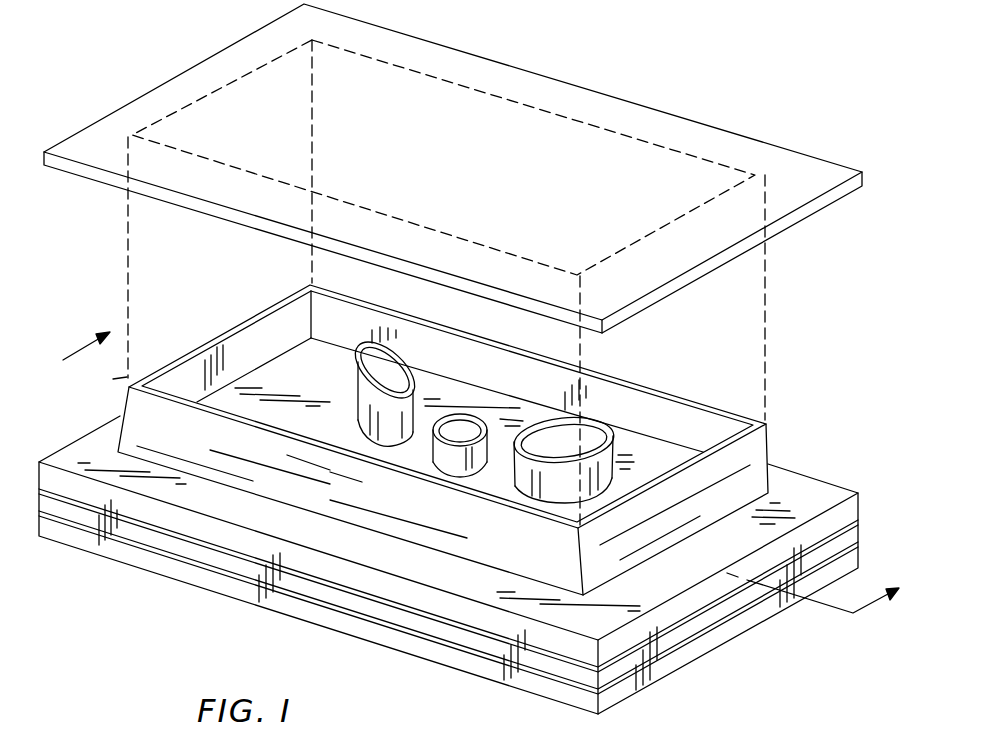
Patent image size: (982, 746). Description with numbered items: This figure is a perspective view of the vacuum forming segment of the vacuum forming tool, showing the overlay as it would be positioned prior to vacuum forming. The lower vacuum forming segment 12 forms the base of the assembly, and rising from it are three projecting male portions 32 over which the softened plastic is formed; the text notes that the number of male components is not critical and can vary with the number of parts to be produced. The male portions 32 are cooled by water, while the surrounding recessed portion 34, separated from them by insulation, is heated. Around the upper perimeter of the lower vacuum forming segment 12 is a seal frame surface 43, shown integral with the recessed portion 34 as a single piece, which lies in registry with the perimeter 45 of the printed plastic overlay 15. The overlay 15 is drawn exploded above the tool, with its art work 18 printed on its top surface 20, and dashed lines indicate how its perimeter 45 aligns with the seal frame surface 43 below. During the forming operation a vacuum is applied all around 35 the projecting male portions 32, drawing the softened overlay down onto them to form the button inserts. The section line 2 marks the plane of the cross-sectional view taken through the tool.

The lower vacuum forming segment 12 is at (78, 441).
The overlay 15 is at (606, 144).
The art work 18 is at (468, 173).
The top surface 20 is at (434, 97).
The projecting male portions 32 is at (380, 358).
The recessed portion 34 is at (277, 373).
The all around (vacuum region) 35 is at (358, 419).
The seal frame surface 43 is at (176, 359).
The perimeter 45 is at (431, 283).
The section line 2- 2 is at (487, 470).